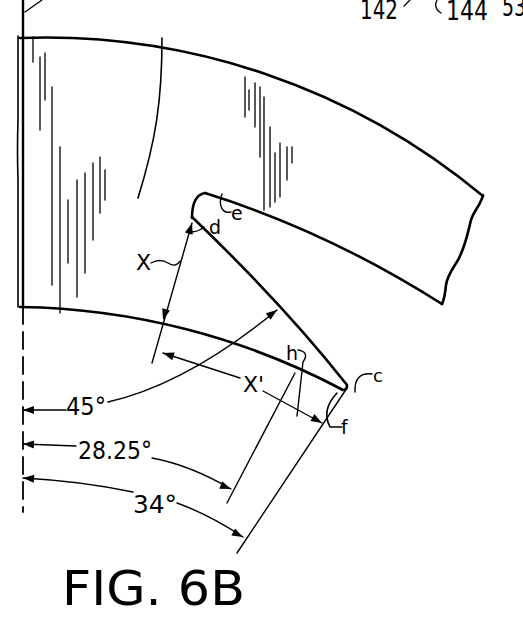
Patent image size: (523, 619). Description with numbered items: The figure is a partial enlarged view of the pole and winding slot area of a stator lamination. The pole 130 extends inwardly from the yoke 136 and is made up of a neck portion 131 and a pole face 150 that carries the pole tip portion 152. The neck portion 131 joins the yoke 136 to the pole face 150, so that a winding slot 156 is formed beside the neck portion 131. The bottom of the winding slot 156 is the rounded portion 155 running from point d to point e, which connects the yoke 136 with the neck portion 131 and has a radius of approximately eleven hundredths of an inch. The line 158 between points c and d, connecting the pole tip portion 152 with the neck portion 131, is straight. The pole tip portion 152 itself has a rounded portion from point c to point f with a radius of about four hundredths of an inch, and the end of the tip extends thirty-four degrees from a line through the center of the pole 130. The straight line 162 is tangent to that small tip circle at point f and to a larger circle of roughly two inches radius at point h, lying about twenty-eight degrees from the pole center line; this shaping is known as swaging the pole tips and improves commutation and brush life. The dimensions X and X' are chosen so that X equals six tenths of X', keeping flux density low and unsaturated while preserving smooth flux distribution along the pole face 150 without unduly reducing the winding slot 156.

The pole 130 is at (75, 115).
The neck portion 131 is at (158, 105).
The yoke 136 is at (422, 182).
The pole face 150 is at (153, 334).
The pole tip portion 152 is at (348, 393).
The rounded portion 155 is at (191, 214).
The winding slot 156 is at (278, 249).
The line 158 is at (273, 302).
The straight line 162 is at (287, 463).